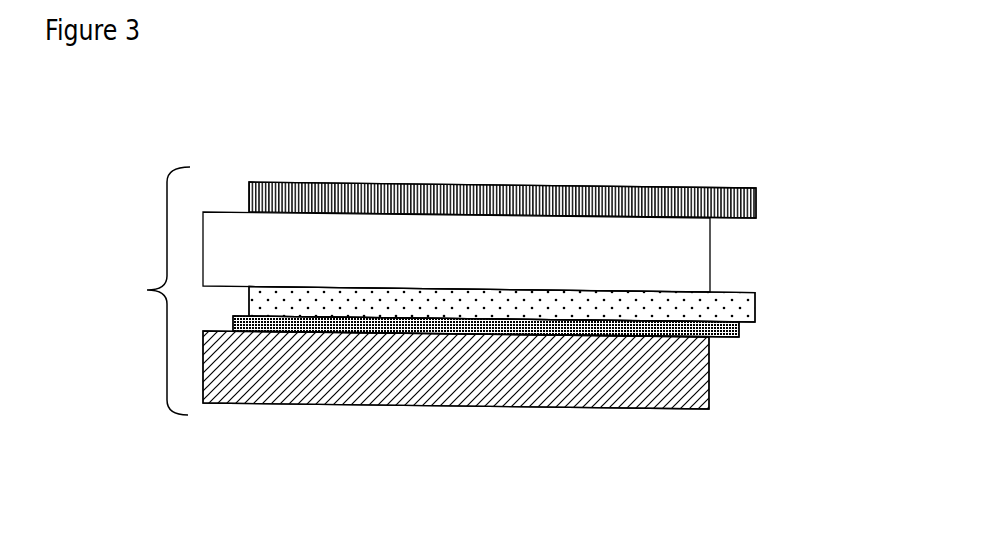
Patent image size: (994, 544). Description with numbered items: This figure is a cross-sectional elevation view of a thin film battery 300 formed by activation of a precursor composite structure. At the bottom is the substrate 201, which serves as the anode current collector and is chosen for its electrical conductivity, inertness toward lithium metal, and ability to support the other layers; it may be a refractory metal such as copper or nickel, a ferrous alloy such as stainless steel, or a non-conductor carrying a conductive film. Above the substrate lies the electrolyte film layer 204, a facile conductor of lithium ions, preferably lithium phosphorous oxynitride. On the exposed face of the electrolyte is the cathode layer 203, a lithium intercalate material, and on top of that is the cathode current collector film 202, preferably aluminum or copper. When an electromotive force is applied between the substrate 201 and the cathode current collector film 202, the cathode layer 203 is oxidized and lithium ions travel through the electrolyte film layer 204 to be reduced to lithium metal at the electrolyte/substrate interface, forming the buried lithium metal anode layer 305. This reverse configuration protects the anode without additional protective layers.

The battery 300 is at (139, 291).
The cathode current collector film 202 is at (770, 208).
The cathode layer 203 is at (723, 256).
The electrolyte film layer 204 is at (768, 318).
The buried lithium metal anode layer 305 is at (752, 346).
The substrate 201 is at (653, 437).